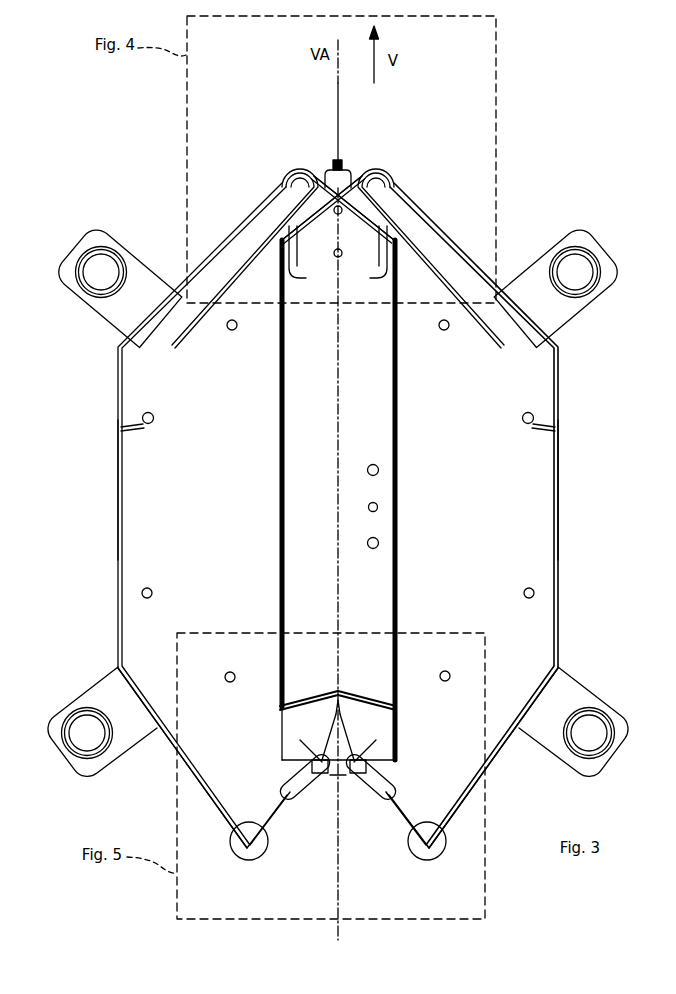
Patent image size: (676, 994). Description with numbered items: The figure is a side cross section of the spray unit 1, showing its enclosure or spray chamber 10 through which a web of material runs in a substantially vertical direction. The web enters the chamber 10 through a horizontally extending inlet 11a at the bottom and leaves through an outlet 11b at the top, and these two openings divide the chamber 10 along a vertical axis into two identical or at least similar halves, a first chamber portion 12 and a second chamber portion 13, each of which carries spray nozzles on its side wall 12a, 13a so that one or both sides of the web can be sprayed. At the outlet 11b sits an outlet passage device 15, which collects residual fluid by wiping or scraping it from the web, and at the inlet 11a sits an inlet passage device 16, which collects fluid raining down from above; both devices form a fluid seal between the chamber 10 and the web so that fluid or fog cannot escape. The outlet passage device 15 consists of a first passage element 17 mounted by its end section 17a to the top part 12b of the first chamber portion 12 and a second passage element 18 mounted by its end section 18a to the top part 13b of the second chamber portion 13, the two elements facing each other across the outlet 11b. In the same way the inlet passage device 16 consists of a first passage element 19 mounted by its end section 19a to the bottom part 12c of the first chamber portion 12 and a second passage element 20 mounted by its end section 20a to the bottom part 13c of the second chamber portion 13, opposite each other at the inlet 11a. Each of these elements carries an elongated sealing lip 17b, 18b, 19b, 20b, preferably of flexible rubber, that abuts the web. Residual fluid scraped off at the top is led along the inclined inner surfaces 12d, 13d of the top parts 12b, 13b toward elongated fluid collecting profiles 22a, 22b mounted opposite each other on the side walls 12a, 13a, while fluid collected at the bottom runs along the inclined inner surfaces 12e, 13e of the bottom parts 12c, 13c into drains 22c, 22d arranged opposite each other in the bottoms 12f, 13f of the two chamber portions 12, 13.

The spray unit 1 is at (338, 486).
The spray chamber 10 is at (338, 486).
The inlet 11a is at (331, 777).
The outlet 11b is at (345, 210).
The first chamber portion 12 is at (484, 514).
The side wall of first chamber portion 12a is at (553, 445).
The top part of first chamber portion 12b is at (395, 222).
The bottom part of first chamber portion 12c is at (383, 769).
The inner surface of top part 12d is at (440, 282).
The inner surface of bottom part 12e is at (390, 781).
The bottom of first chamber portion 12f is at (447, 821).
The second chamber portion 13 is at (192, 513).
The side wall of second chamber portion 13a is at (123, 445).
The top part of second chamber portion 13b is at (302, 204).
The bottom part of second chamber portion 13c is at (306, 771).
The inner surface of top part 13d is at (238, 282).
The inner surface of bottom part 13e is at (293, 774).
The bottom of second chamber portion 13f is at (232, 821).
The outlet passage device 15 is at (343, 157).
The inlet passage device 16 is at (340, 712).
The first passage element of outlet passage device 17 is at (388, 170).
The end section 17a is at (380, 212).
The sealing lip 17b is at (347, 192).
The second passage element of outlet passage device 18 is at (286, 168).
The end section 18a is at (310, 207).
The sealing lip 18b is at (339, 183).
The first passage element of inlet passage device 19 is at (397, 707).
The end section 19a is at (367, 759).
The sealing lip 19b is at (341, 720).
The second passage element of inlet passage device 20 is at (279, 707).
The end section 20a is at (310, 762).
The sealing lip 20b is at (322, 706).
The first fluid collecting profile 22a is at (524, 426).
The second fluid collecting profile 22b is at (152, 426).
The first drain 22c is at (428, 822).
The second drain 22d is at (246, 822).